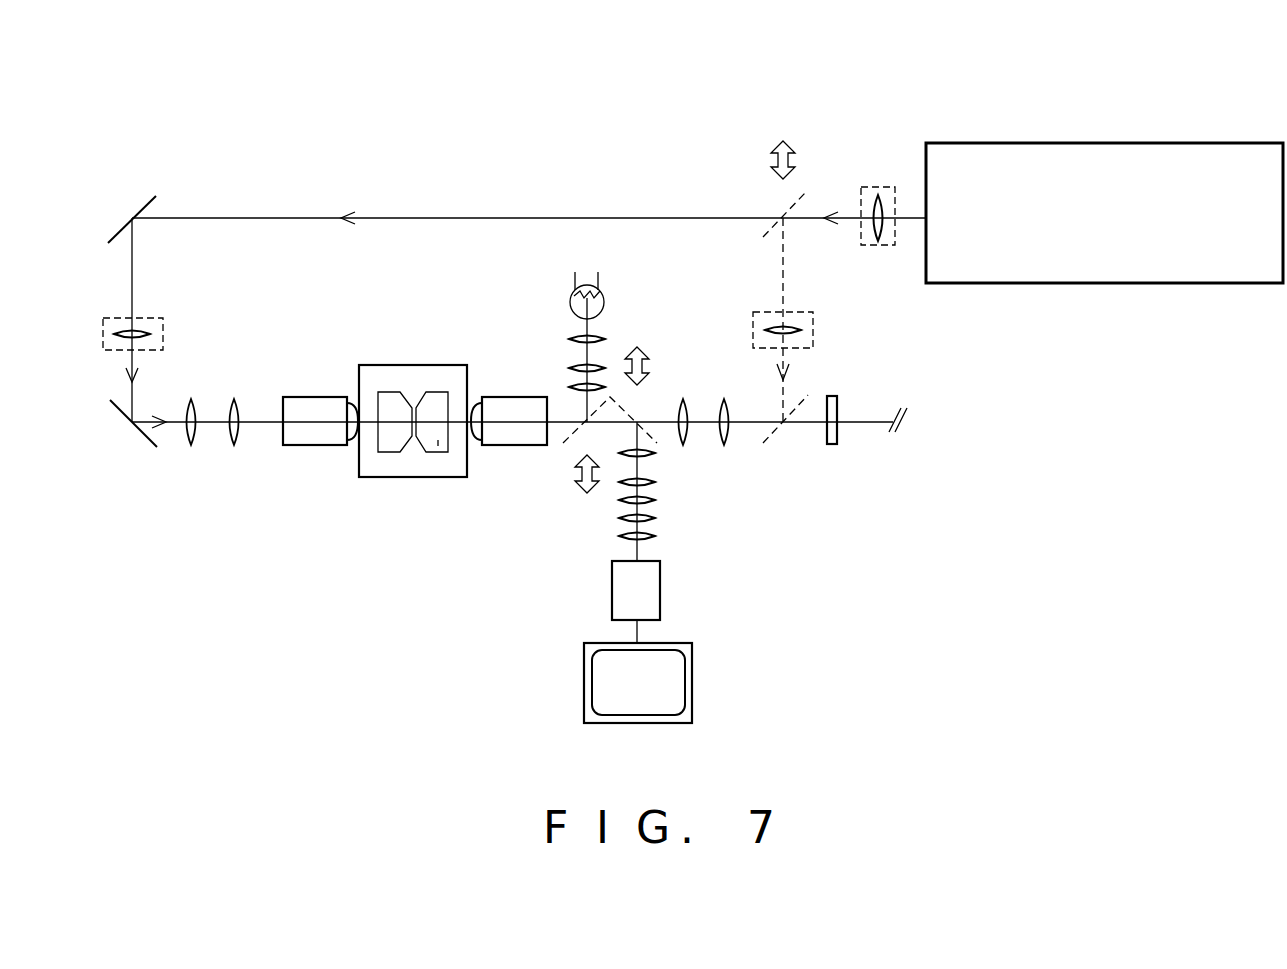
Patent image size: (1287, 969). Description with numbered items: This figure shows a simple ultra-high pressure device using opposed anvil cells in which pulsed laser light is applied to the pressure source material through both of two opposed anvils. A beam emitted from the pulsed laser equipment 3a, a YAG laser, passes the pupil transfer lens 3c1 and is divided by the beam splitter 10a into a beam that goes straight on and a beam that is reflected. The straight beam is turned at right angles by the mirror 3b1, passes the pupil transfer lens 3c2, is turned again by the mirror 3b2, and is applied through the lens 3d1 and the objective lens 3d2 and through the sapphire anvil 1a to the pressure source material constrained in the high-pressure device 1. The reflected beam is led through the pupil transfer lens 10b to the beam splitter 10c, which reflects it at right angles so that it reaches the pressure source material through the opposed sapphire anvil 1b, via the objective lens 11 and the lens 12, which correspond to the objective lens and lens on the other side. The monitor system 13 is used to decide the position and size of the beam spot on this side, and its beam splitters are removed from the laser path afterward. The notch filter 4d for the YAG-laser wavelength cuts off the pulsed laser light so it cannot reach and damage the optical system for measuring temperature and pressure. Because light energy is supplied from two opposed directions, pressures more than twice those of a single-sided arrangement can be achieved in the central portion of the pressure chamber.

The pulsed laser 3a is at (1112, 143).
The mirror 3b1 is at (136, 220).
The mirror 3b2 is at (145, 440).
The pupil transfer lens 3c1 is at (872, 187).
The pupil transfer lens 3c2 is at (164, 322).
The lens 3d1 is at (252, 456).
The objective lens 3d2 is at (318, 397).
The high-pressure device 1 is at (410, 478).
The sapphire anvil 1a is at (358, 478).
The sapphire anvil 1b is at (438, 440).
The objective lens 11 is at (530, 446).
The lens 12 is at (739, 456).
The monitor system 13 is at (657, 755).
The beam splitter 10a is at (778, 206).
The pupil transfer lens 10b is at (813, 322).
The beam splitter 10c is at (778, 430).
The notch filter 4d is at (838, 400).